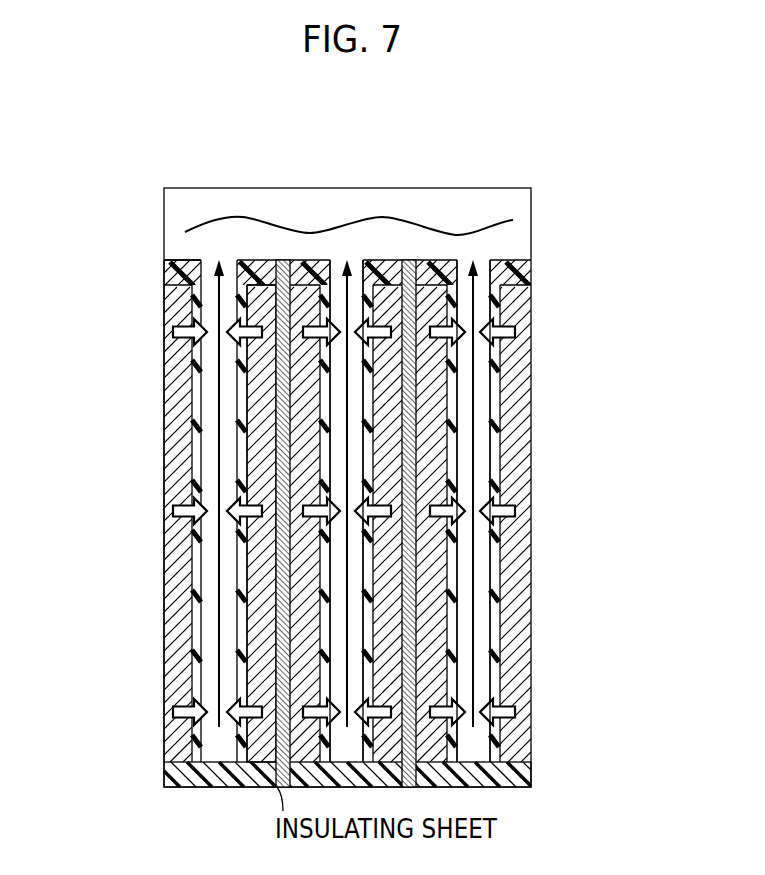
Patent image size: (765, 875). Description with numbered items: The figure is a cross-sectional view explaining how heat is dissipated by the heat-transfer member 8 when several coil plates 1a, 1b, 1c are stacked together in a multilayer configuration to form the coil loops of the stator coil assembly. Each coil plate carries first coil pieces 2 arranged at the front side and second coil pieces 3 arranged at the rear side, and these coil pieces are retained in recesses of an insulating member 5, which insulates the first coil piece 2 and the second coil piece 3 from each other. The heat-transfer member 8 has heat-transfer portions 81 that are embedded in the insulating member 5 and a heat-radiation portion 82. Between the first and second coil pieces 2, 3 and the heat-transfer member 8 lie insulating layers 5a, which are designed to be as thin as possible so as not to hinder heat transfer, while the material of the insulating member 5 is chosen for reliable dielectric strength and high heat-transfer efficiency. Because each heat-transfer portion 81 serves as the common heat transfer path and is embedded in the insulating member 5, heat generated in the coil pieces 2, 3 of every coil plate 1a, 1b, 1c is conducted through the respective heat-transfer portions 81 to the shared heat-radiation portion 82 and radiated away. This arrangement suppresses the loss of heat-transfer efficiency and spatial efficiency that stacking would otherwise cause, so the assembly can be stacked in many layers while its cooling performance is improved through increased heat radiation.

The first coil plate 1a is at (225, 180).
The coil plate 1b is at (358, 180).
The coil plate 1c is at (501, 180).
The first coil piece 2 is at (168, 667).
The second coil piece 3 is at (260, 582).
The insulating member 5 is at (186, 783).
The insulating layer 5a is at (243, 427).
The heat-transfer member 8 is at (284, 468).
The heat-transfer portion 81 is at (207, 382).
The heat-radiation portion 82 is at (173, 239).